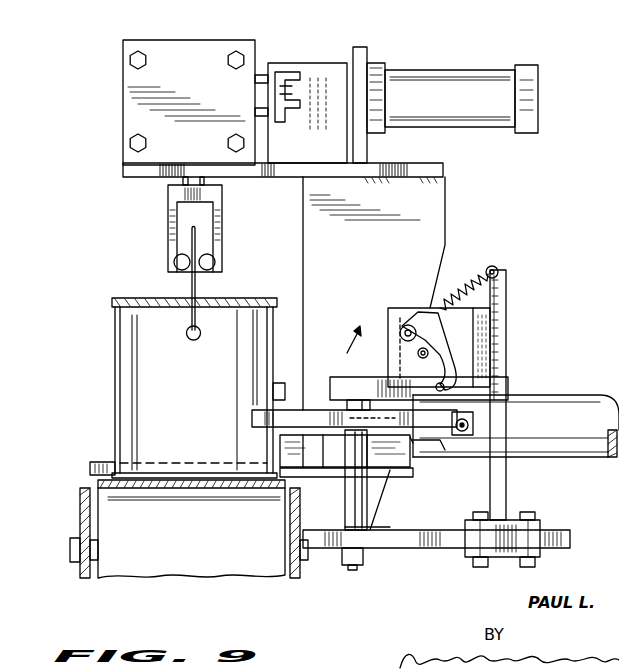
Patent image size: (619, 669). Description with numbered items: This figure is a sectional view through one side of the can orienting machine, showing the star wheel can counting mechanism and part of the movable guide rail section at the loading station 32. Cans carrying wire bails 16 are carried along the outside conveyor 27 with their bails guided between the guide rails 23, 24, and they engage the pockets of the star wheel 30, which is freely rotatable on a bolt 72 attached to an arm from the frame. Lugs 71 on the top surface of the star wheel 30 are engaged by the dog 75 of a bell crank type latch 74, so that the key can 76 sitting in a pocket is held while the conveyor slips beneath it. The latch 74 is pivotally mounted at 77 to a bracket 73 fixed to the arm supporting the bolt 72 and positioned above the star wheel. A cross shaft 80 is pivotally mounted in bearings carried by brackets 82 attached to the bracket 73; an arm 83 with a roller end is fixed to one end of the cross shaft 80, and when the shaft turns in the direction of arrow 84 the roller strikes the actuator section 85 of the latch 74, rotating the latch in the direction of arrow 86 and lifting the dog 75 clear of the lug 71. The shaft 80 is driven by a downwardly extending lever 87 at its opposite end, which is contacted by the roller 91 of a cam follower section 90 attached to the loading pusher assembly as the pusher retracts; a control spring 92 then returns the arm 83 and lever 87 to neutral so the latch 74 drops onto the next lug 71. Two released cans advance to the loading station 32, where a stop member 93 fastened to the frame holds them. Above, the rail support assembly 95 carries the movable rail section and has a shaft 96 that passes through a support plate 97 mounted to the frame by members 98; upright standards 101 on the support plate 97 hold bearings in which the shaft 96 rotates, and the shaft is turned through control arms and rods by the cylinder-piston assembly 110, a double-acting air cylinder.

The upright standards 101 is at (133, 76).
The cylinder-piston assembly 110 is at (467, 76).
The shaft 96 is at (183, 181).
The support plate 97 is at (250, 178).
The members 98 is at (432, 193).
The rail support assembly 95 is at (170, 228).
The guide rail 23 is at (213, 257).
The guide rail 24 is at (177, 258).
The bail 16 is at (195, 283).
The loading station 32 is at (100, 286).
The lugs 71 is at (280, 398).
The key can 76 is at (279, 310).
The stop member 93 is at (105, 462).
The outside conveyor 27 is at (118, 503).
The star wheel 30 is at (257, 418).
The roller 91 is at (467, 413).
The bracket 73 is at (507, 490).
The bell crank type latch 74 is at (437, 323).
The control spring 92 is at (490, 268).
The bolt 72 is at (363, 553).
The dog 75 is at (337, 400).
The arrow 86 is at (345, 377).
The brackets 82 is at (480, 325).
The actuator section 85 is at (447, 365).
The cross shaft 80 is at (415, 330).
The arm 83 is at (418, 351).
The pivot 77 is at (478, 373).
The arrow 84 is at (385, 296).
The cam follower section 90 is at (440, 440).
The lever 87 is at (413, 443).